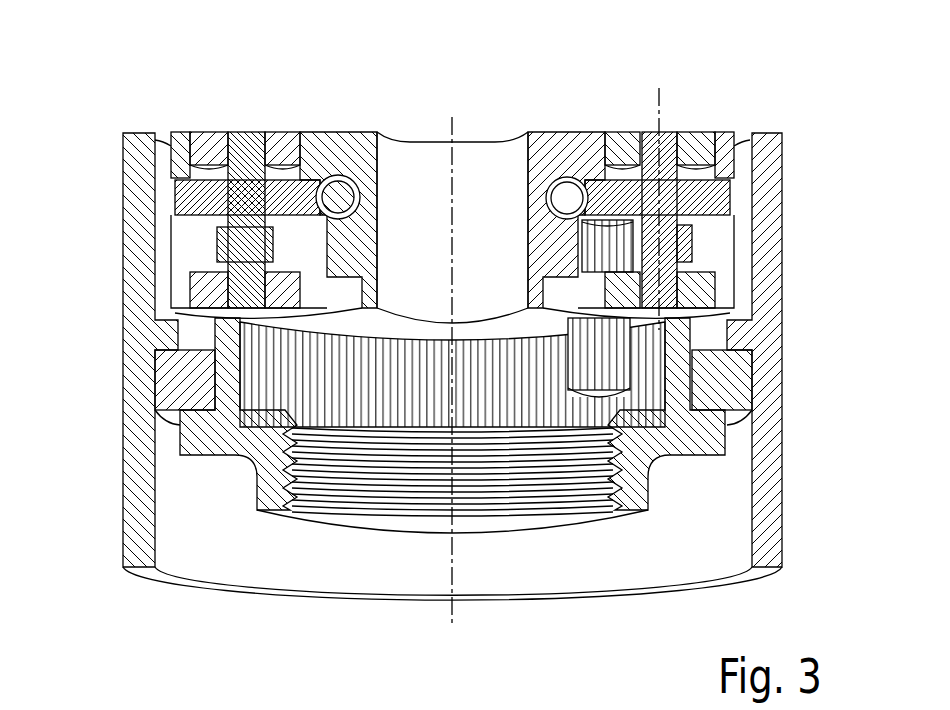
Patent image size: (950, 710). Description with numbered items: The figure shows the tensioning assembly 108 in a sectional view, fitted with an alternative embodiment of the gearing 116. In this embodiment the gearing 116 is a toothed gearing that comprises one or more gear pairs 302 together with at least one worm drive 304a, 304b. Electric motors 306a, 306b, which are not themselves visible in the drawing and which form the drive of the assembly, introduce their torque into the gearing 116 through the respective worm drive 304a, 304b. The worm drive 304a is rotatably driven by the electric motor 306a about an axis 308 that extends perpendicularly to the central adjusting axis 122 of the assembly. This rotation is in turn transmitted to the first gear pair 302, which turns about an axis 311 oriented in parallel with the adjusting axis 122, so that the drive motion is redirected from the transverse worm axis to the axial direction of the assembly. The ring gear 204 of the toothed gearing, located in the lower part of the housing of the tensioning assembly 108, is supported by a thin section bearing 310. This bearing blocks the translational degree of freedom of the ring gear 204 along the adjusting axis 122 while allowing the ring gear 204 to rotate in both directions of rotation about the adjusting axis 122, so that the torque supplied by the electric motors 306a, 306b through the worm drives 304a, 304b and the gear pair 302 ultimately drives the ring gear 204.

The tensioning assembly 108 is at (112, 294).
The adjusting axis 122 is at (425, 168).
The ring gear 204 is at (662, 437).
The gear pair 302 is at (633, 255).
The worm drive 304a is at (322, 196).
The worm drive 304b is at (583, 198).
The electric motor 306a is at (251, 112).
The electric motor 306b is at (616, 112).
The axis 308 is at (567, 180).
The thin section bearing 310 is at (735, 377).
The axis 311 is at (690, 216).
The gearing 116 is at (704, 239).